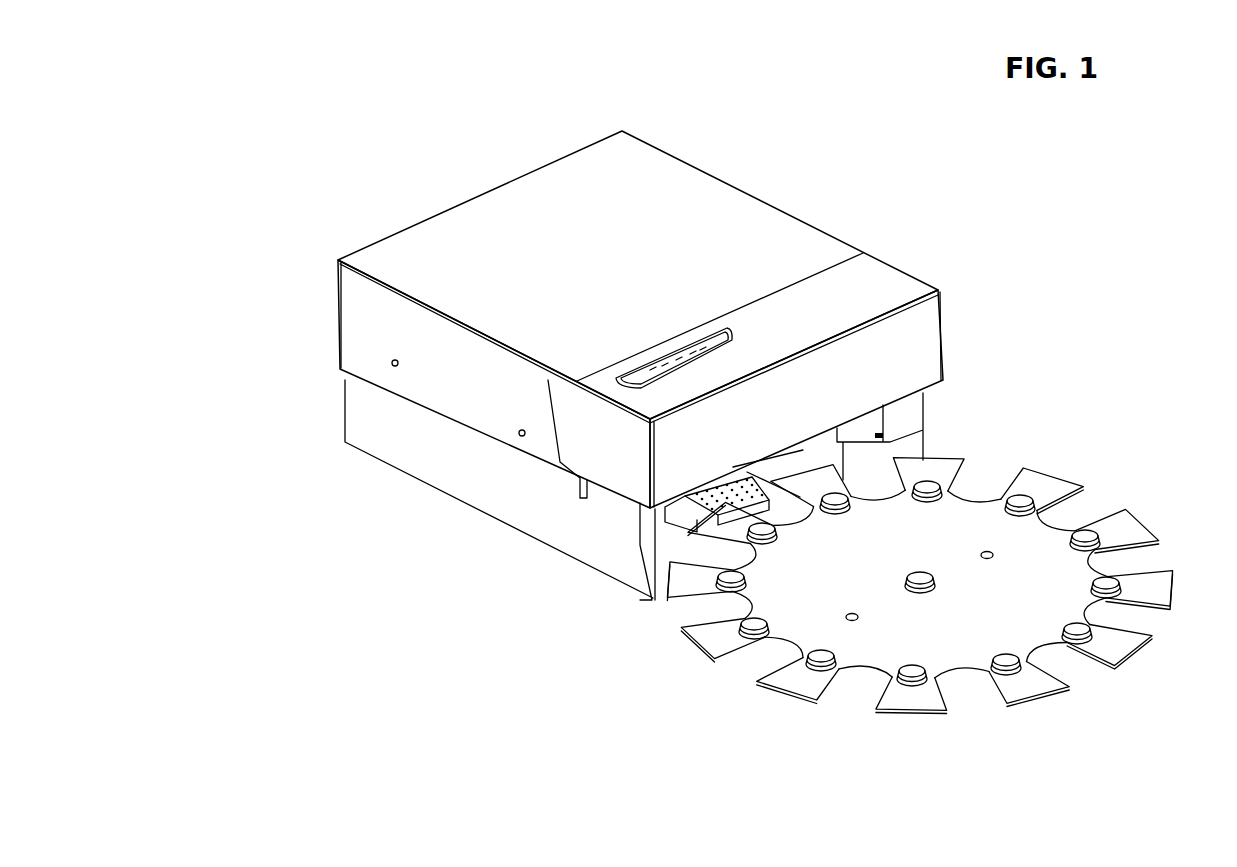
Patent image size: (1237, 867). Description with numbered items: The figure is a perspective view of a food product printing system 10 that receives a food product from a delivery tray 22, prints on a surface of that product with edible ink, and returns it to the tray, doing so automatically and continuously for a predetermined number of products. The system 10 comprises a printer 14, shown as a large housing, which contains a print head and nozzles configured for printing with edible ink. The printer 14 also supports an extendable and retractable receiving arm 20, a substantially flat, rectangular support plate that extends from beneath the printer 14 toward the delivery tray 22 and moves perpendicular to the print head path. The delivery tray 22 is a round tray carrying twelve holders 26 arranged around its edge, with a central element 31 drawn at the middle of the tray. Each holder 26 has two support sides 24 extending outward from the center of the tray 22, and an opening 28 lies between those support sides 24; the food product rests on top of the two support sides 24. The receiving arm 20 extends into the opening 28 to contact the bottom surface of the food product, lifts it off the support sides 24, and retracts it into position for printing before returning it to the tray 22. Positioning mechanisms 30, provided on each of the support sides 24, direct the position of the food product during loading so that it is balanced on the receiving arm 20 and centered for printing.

The printing system 10 is at (281, 213).
The printer 14 is at (980, 302).
The receiving arm 20 is at (704, 517).
The delivery tray 22 is at (950, 594).
The support sides 24 is at (795, 680).
The holder 26 is at (1142, 476).
The opening 28 is at (970, 698).
The positioning mechanism 30 is at (1034, 674).
The center cup 31 is at (942, 544).